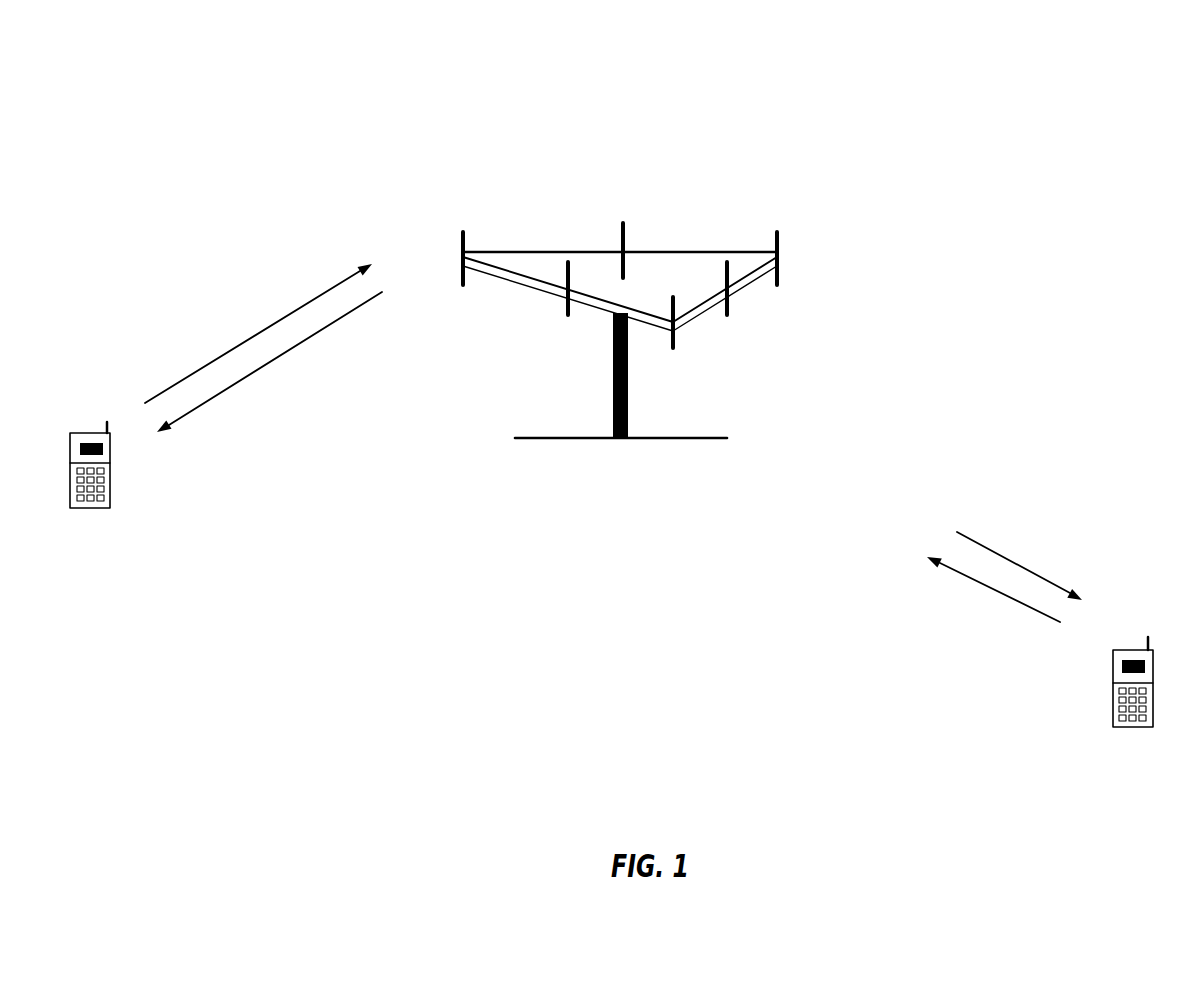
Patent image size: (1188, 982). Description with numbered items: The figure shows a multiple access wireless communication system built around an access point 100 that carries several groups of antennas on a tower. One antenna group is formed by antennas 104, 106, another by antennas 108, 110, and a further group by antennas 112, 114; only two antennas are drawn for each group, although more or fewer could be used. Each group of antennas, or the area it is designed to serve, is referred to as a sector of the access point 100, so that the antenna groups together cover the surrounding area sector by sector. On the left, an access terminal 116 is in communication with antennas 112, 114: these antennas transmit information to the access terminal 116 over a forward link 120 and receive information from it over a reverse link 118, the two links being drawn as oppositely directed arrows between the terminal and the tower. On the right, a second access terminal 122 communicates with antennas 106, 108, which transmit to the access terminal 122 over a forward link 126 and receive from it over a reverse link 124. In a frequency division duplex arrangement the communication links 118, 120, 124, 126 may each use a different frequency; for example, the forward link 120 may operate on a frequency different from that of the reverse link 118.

The access point 100 is at (587, 441).
The antenna 104 is at (678, 343).
The antenna 106 is at (730, 317).
The antenna 108 is at (788, 278).
The antenna 110 is at (625, 224).
The antenna 112 is at (465, 245).
The antenna 114 is at (568, 318).
The access terminal 116 is at (89, 431).
The reverse link 118 is at (256, 334).
The forward link 120 is at (283, 358).
The access terminal 122 is at (1133, 650).
The reverse link 124 is at (975, 582).
The forward link 126 is at (1025, 570).